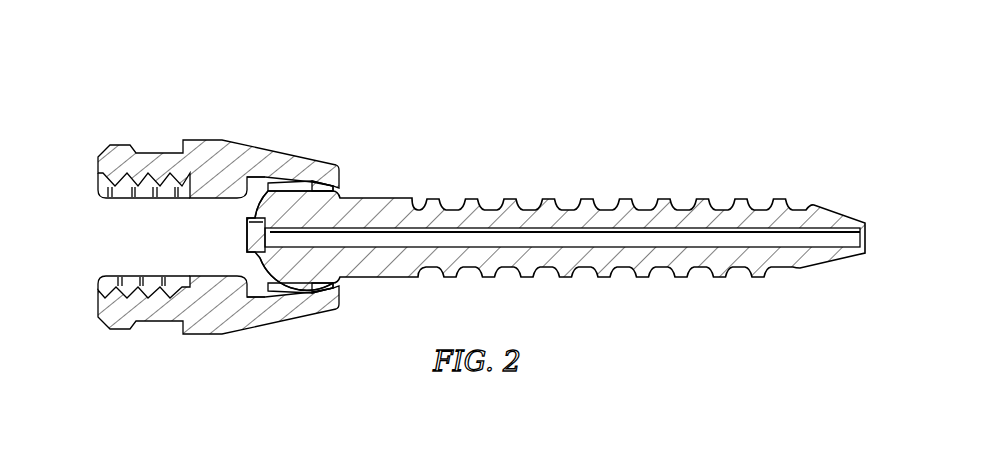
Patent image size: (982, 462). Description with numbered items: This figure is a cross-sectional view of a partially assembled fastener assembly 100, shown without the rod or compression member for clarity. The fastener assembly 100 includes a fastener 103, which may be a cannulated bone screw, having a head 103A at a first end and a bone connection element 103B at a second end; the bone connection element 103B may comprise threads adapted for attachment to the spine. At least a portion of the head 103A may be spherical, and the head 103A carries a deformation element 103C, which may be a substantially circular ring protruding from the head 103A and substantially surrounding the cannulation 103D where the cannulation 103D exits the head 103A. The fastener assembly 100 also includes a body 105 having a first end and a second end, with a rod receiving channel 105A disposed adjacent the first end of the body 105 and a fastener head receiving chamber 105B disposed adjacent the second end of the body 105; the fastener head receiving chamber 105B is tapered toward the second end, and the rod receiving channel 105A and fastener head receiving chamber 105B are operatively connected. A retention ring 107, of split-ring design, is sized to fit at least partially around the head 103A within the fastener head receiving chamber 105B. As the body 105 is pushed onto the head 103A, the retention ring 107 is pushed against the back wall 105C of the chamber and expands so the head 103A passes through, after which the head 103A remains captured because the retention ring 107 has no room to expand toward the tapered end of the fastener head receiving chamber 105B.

The fastener assembly 100 is at (98, 88).
The fastener 103 is at (822, 270).
The head 103A is at (302, 266).
The bone connection element 103B is at (448, 165).
The deformation element 103C is at (245, 251).
The cannulation 103D is at (594, 239).
The body 105 is at (205, 139).
The rod receiving channel 105A is at (160, 199).
The fastener head receiving chamber 105B is at (253, 294).
The back wall of fastener head receiving chamber 105C is at (258, 190).
The retention ring 107 is at (280, 188).